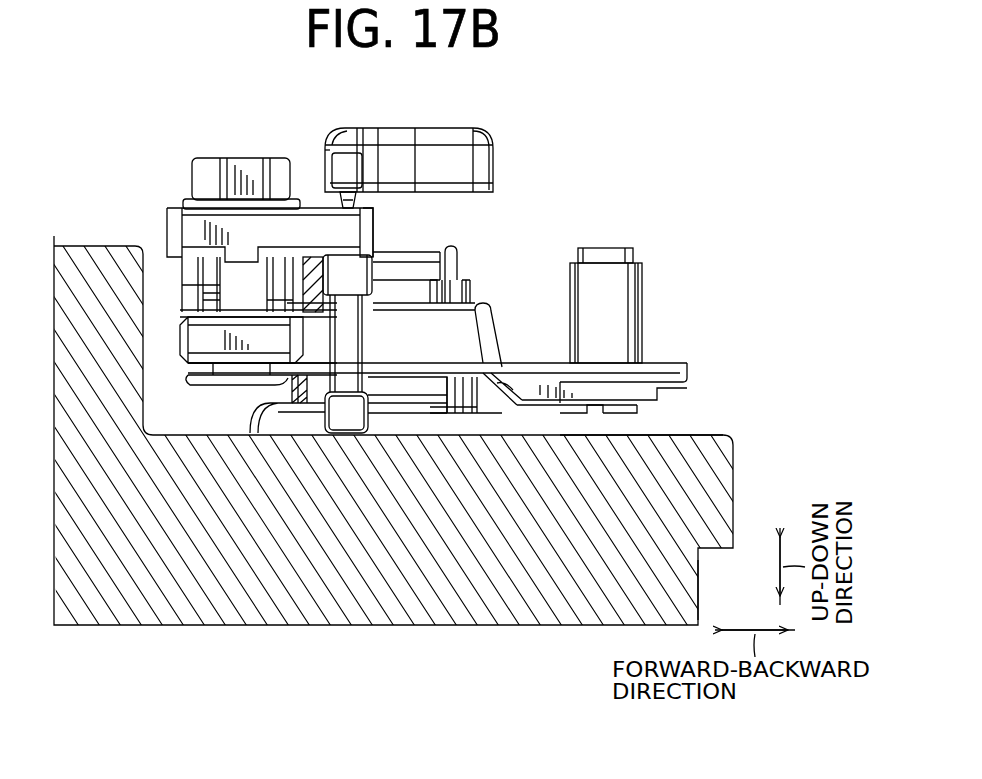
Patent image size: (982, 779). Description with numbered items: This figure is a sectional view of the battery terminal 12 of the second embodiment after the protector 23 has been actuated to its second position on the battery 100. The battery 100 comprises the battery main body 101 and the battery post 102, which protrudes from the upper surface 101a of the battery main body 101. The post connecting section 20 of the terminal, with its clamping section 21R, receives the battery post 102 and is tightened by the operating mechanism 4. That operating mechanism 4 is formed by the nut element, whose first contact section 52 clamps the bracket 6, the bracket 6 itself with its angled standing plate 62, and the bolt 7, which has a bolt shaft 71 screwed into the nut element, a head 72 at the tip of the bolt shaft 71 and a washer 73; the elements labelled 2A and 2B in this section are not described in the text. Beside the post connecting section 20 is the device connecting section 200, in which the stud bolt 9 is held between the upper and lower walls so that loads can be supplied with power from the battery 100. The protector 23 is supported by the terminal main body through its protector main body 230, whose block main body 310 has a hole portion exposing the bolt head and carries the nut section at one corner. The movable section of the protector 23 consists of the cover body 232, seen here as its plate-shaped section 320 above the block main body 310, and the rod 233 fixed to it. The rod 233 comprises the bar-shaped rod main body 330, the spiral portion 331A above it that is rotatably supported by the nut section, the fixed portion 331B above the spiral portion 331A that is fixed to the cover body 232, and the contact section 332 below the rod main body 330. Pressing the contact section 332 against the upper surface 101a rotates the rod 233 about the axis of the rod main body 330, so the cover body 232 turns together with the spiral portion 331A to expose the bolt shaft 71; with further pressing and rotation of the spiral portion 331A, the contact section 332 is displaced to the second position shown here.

The battery 100 is at (738, 480).
The battery main body 101 is at (725, 453).
The upper surface 101a is at (687, 437).
The plate-shaped section 320 is at (448, 132).
The protector 23 is at (418, 132).
The cover body 232 is at (488, 135).
The spiral portion 331A is at (337, 207).
The fixed portion 331B is at (322, 138).
The bolt 7 is at (220, 149).
The head 72 is at (228, 158).
The washer 73 is at (187, 199).
The bracket 6 is at (182, 262).
The block main body 310 is at (373, 223).
The standing plate 62 is at (247, 300).
The protector main body 230 is at (375, 243).
The rod main body 330 is at (362, 341).
The contact section 332 is at (330, 418).
The rod 233 is at (366, 383).
The bolt shaft 71 is at (182, 306).
The first contact section 52 is at (183, 327).
The battery post 102 is at (443, 260).
The first terminal 2A is at (455, 368).
The second terminal 2B is at (473, 306).
The post connecting section 20 is at (480, 305).
The clamping section 21R is at (496, 333).
The device connecting section 200 is at (673, 362).
The stud bolt 9 is at (625, 300).
The battery terminal 12 is at (790, 209).
The operating mechanism 4 is at (790, 300).